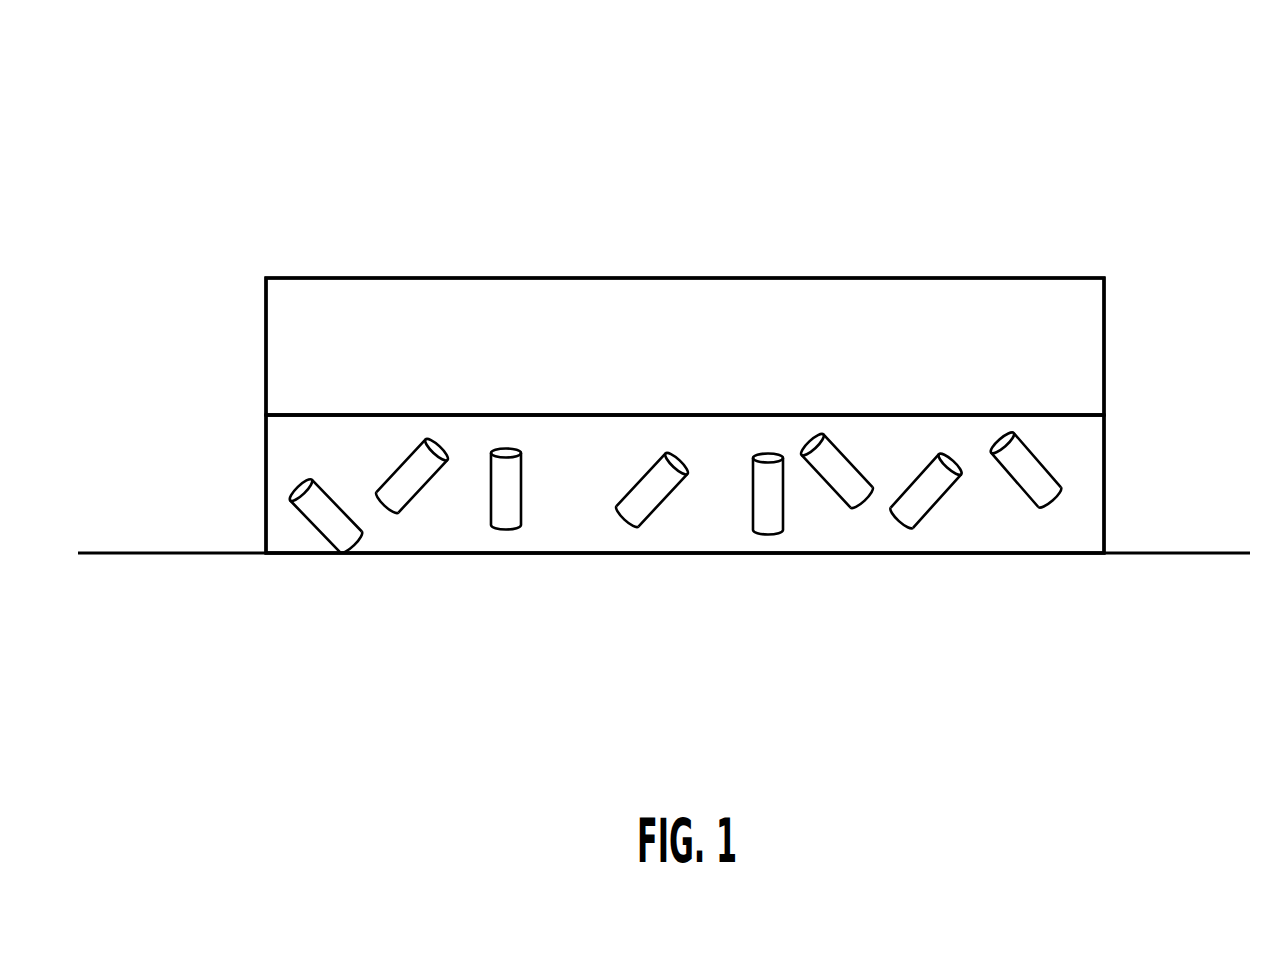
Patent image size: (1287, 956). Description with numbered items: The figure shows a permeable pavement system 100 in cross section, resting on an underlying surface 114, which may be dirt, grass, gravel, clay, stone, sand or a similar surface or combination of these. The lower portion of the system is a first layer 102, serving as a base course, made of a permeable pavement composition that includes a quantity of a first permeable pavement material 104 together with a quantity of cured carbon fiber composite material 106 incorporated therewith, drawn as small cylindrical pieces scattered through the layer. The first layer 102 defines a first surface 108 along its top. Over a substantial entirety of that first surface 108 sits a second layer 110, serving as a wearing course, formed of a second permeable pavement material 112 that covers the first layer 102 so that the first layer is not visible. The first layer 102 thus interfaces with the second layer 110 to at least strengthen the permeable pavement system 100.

The permeable pavement system 100 is at (688, 369).
The first layer 102 is at (1105, 525).
The first permeable pavement material 104 is at (819, 538).
The cured carbon fiber composite material 106 is at (635, 526).
The first surface 108 is at (289, 414).
The second layer 110 is at (1100, 345).
The second permeable pavement material 112 is at (429, 309).
The surface 114 is at (155, 552).